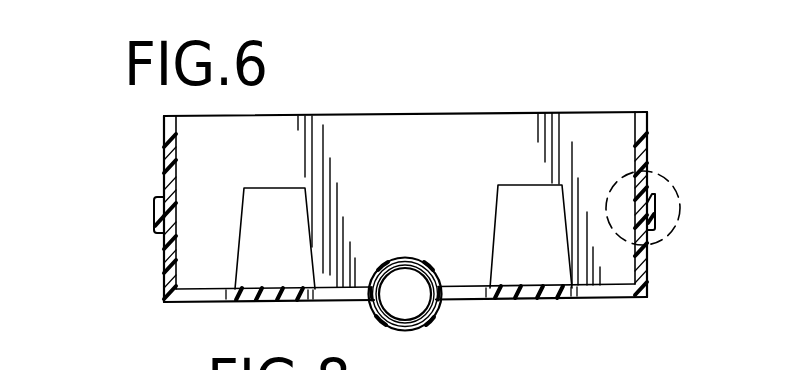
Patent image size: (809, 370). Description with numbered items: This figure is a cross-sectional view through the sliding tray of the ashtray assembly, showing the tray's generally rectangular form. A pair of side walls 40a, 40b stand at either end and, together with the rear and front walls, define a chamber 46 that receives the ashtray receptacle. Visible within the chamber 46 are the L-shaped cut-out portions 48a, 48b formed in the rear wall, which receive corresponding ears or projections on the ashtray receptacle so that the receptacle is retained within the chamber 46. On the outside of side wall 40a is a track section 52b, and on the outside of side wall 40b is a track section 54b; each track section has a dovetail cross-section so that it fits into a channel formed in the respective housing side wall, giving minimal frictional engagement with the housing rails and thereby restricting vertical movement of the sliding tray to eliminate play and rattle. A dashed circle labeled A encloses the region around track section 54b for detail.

The side wall 40a is at (170, 168).
The side wall 40b is at (640, 165).
The chamber 46 is at (395, 160).
The L-shaped cut-out portion 48a is at (272, 208).
The L-shaped cut-out portion 48b is at (525, 216).
The track section 52b is at (158, 213).
The track section 54b is at (650, 212).
The detail region A is at (675, 190).